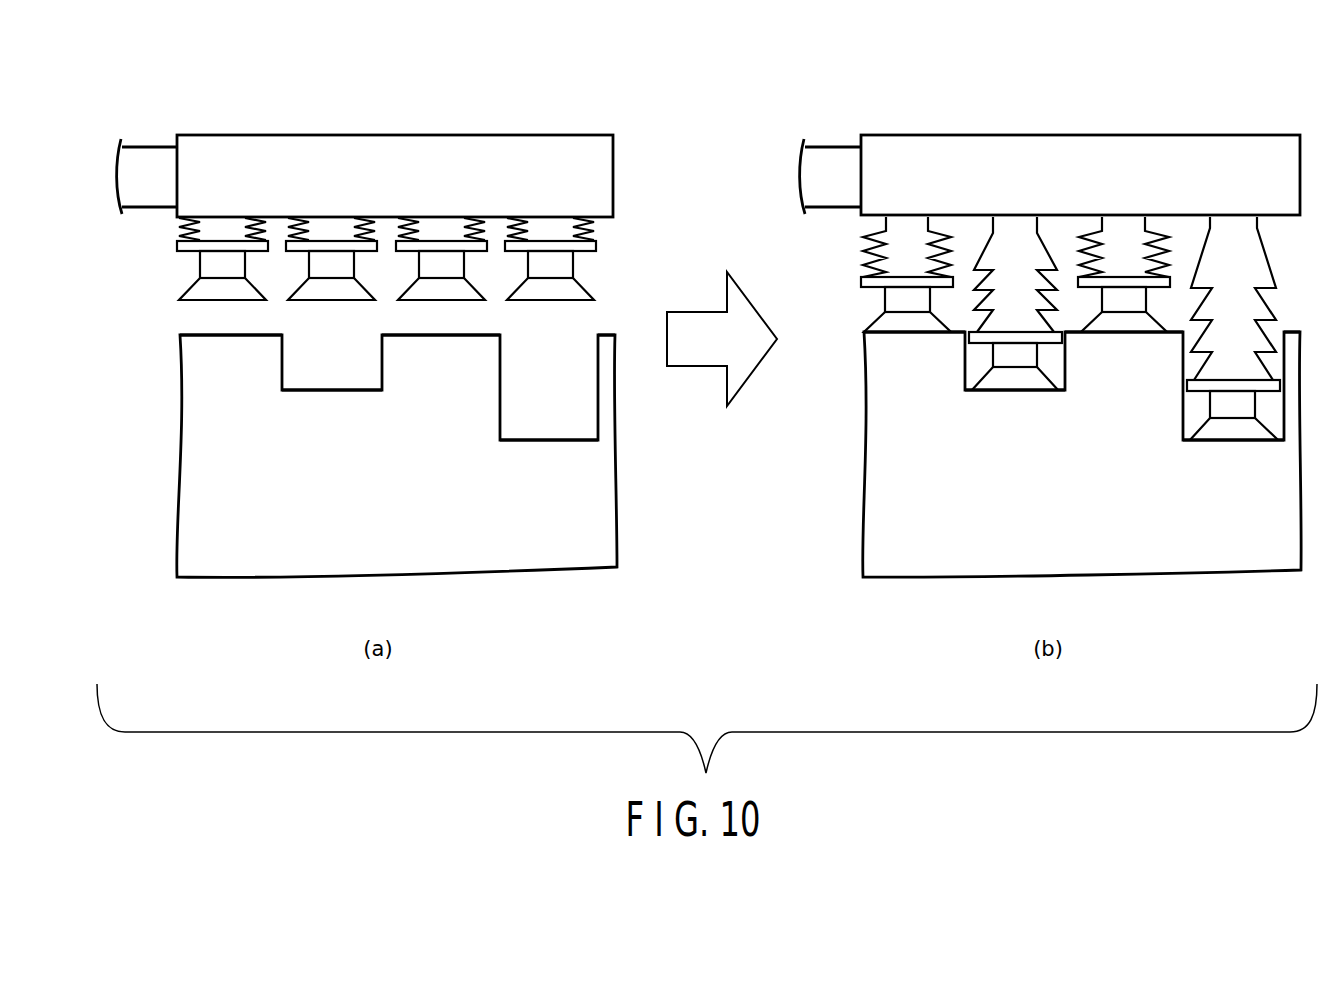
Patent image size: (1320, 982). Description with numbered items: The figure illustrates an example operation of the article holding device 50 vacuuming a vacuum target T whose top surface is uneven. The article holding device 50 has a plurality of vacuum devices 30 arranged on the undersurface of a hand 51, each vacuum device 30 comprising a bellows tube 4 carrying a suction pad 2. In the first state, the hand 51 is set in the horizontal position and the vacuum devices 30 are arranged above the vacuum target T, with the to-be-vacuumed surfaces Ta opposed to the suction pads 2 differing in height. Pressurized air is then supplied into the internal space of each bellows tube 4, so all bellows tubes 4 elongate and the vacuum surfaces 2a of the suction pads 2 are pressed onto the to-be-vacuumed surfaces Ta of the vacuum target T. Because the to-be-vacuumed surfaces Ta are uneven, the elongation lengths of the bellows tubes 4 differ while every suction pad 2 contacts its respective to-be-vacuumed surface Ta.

The article holding device 50 is at (708, 216).
The hand 51 is at (472, 150).
The bellows tube 4 is at (586, 235).
The vacuum device 30 is at (198, 265).
The suction pad 2 is at (212, 292).
The vacuum surface 2a is at (222, 303).
The vacuum target T is at (399, 568).
The to-be-vacuumed surface Ta is at (193, 334).